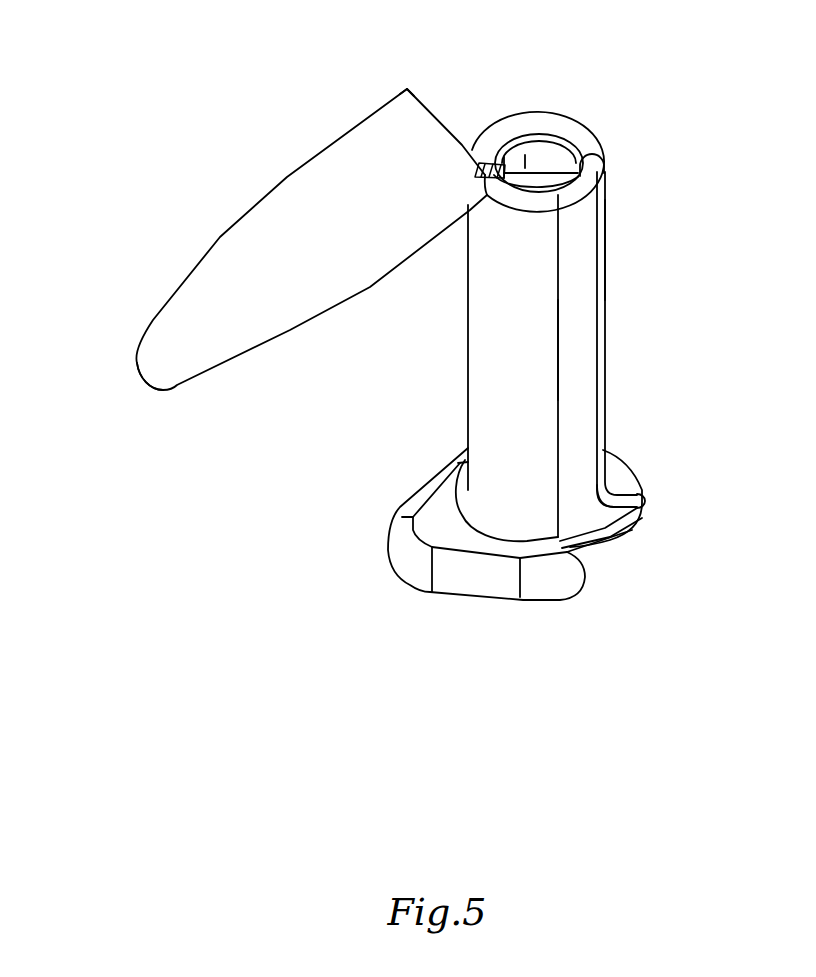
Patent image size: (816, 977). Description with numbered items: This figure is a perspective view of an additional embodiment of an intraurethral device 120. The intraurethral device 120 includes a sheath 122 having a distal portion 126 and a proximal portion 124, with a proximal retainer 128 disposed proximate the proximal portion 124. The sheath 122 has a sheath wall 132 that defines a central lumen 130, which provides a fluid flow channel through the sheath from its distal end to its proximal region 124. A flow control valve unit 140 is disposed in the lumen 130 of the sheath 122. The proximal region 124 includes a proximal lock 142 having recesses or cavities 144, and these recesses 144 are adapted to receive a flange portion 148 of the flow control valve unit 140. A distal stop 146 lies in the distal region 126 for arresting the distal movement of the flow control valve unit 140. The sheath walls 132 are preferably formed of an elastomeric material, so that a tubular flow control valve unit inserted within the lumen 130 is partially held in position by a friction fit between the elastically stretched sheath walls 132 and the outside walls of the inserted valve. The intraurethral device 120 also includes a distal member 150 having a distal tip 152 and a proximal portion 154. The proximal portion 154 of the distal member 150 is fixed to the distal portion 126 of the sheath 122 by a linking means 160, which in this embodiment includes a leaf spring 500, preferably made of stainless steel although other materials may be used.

The intraurethral device 120 is at (270, 418).
The sheath 122 is at (490, 428).
The proximal portion 124 is at (483, 492).
The distal portion 126 is at (617, 142).
The proximal retainer 128 is at (467, 573).
The central lumen 130 is at (598, 302).
The sheath wall 132 is at (607, 240).
The flow control valve unit 140 is at (583, 357).
The proximal lock 142 is at (657, 508).
The recesses 144 is at (640, 492).
The distal stop 146 is at (592, 163).
The flange portion 148 is at (620, 527).
The distal member 150 is at (257, 270).
The distal tip 152 is at (140, 385).
The proximal portion 154 is at (390, 93).
The linking means 160 is at (520, 107).
The leaf spring 500 is at (493, 158).